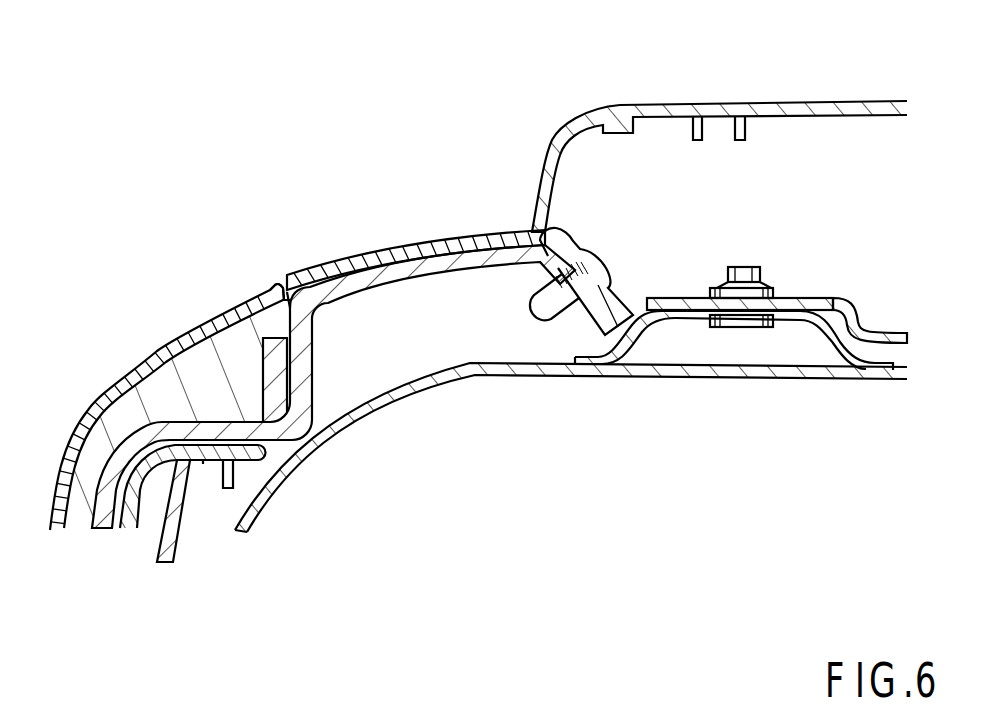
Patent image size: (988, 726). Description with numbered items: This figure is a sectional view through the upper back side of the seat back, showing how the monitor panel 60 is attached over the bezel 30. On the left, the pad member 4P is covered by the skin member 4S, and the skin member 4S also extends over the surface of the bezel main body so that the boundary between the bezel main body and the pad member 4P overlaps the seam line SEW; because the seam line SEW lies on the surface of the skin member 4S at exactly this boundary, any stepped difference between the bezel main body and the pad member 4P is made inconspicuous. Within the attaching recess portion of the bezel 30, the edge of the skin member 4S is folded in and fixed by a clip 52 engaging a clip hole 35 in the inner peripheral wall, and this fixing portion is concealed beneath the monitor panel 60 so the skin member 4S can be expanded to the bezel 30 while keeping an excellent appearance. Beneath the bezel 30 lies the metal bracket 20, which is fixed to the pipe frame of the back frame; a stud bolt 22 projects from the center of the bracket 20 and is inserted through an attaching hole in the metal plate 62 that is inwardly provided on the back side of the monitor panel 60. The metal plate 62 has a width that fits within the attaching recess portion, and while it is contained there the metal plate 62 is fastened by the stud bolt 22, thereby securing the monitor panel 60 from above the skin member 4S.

The skin member 4S is at (157, 343).
The pad member 4P is at (140, 406).
The seam line SEW is at (276, 276).
The bezel 30 is at (423, 243).
The monitor panel 60 is at (777, 98).
The bracket 20 is at (797, 322).
The metal plate 62 is at (834, 299).
The stud bolt 22 is at (748, 266).
The clip 52 is at (598, 262).
The clip hole 35 is at (531, 305).